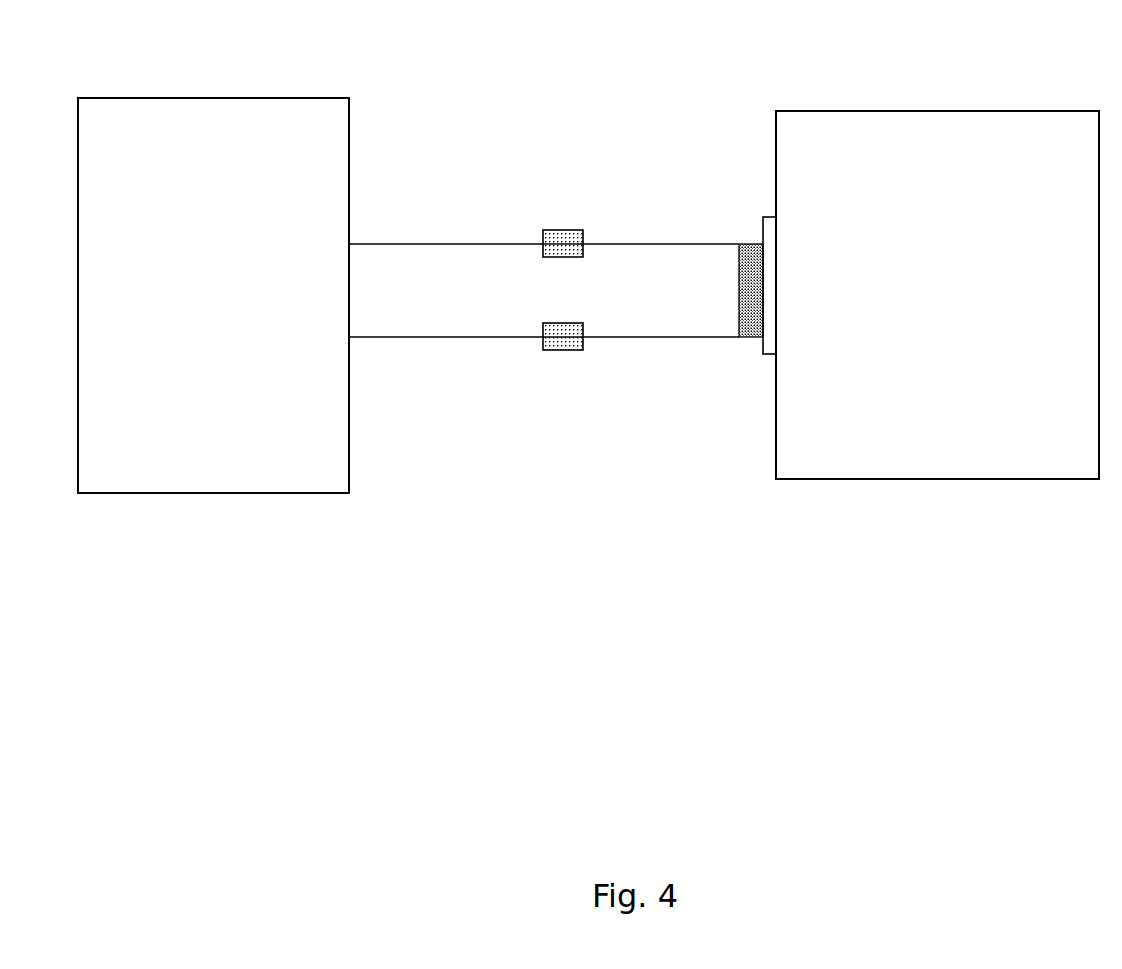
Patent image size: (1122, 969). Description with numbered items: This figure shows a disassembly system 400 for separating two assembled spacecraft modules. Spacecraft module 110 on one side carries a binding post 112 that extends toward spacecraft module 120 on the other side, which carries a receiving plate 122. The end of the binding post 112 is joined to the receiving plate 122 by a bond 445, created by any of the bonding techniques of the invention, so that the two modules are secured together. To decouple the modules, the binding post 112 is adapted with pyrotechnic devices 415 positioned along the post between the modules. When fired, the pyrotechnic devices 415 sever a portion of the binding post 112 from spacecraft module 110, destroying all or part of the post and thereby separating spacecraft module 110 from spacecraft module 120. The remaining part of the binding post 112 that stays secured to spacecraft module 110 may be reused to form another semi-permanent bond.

The disassembly system 400 is at (588, 347).
The spacecraft module 110 is at (214, 98).
The spacecraft module 120 is at (938, 111).
The bonding post 112 is at (513, 248).
The receiving plate 122 is at (770, 217).
The pyrotechnic devices 415 is at (560, 230).
The bond 445 is at (750, 363).